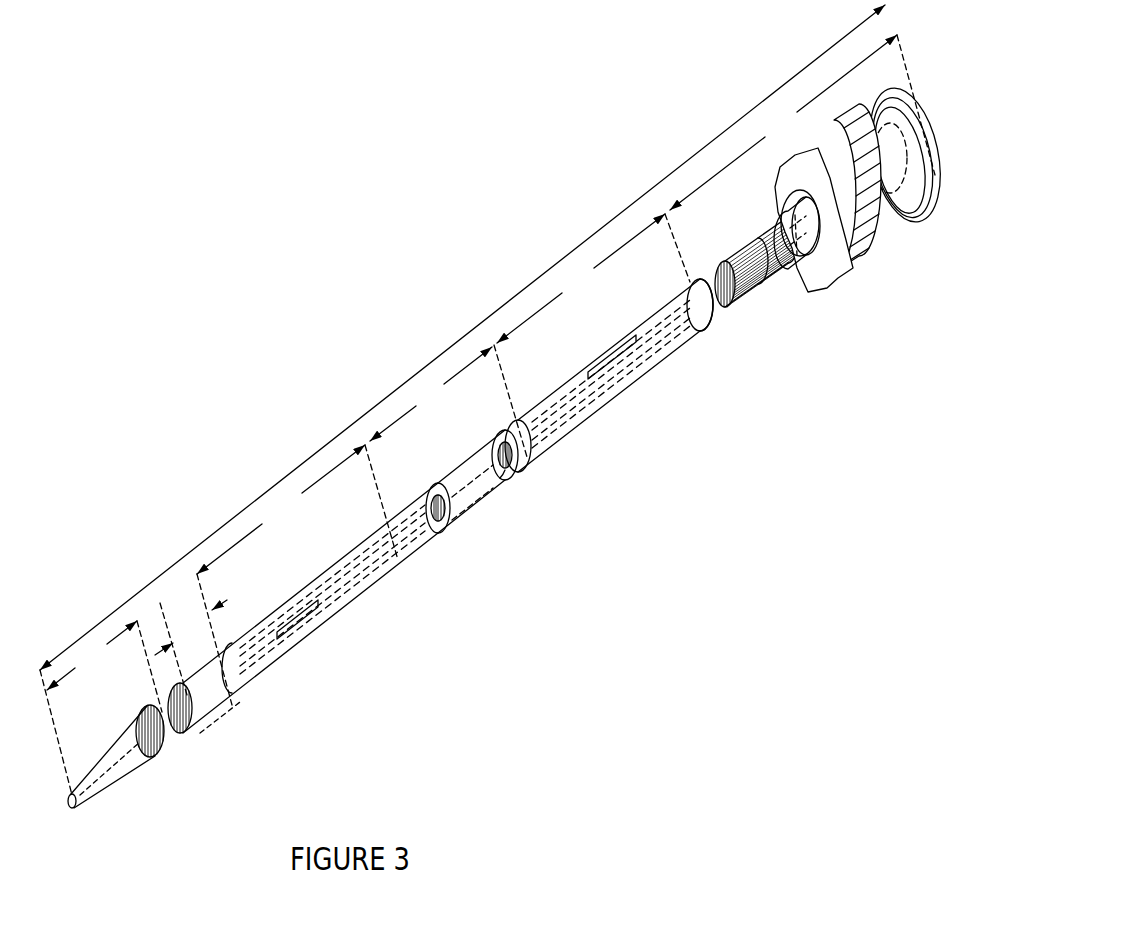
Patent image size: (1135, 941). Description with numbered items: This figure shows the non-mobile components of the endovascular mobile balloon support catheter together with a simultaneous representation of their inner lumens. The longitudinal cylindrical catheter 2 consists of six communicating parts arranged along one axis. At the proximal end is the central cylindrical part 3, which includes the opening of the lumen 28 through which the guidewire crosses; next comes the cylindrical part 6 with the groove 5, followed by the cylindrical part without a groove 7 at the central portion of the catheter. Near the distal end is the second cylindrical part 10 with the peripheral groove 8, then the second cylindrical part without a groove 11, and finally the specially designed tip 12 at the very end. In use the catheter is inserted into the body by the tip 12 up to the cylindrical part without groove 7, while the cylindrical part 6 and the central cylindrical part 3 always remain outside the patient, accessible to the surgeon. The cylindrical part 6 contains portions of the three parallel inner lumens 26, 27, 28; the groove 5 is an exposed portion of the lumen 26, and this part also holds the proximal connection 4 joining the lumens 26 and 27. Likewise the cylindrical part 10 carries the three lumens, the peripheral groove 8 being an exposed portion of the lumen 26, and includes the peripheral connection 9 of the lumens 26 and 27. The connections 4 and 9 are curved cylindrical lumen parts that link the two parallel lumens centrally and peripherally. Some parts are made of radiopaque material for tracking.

The longitudinal cylindrical catheter 2 is at (464, 338).
The central cylindrical part 3 is at (783, 122).
The proximal connection 4 is at (688, 312).
The groove 5 is at (593, 390).
The cylindrical part 6 is at (593, 278).
The cylindrical part without a groove 7 is at (448, 401).
The peripheral groove 8 is at (348, 580).
The peripheral connection 9 is at (228, 663).
The second cylindrical part 10 is at (297, 575).
The second cylindrical part without a groove 11 is at (191, 647).
The tip 12 is at (104, 666).
The lumen 26 is at (507, 477).
The lumen 27 is at (500, 433).
The lumen 28 is at (88, 793).